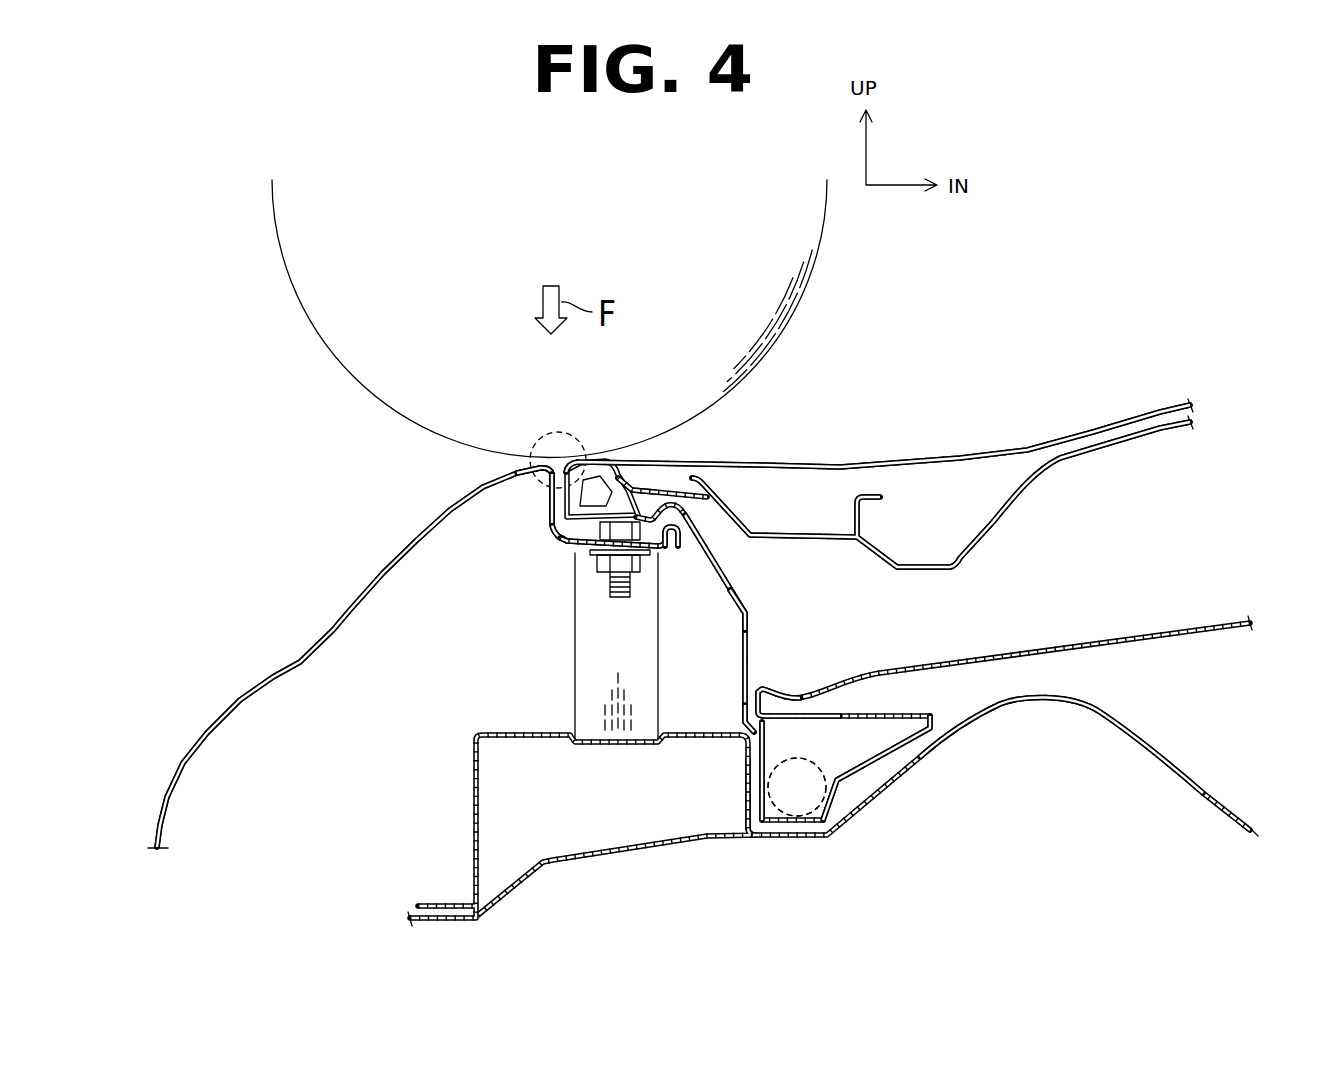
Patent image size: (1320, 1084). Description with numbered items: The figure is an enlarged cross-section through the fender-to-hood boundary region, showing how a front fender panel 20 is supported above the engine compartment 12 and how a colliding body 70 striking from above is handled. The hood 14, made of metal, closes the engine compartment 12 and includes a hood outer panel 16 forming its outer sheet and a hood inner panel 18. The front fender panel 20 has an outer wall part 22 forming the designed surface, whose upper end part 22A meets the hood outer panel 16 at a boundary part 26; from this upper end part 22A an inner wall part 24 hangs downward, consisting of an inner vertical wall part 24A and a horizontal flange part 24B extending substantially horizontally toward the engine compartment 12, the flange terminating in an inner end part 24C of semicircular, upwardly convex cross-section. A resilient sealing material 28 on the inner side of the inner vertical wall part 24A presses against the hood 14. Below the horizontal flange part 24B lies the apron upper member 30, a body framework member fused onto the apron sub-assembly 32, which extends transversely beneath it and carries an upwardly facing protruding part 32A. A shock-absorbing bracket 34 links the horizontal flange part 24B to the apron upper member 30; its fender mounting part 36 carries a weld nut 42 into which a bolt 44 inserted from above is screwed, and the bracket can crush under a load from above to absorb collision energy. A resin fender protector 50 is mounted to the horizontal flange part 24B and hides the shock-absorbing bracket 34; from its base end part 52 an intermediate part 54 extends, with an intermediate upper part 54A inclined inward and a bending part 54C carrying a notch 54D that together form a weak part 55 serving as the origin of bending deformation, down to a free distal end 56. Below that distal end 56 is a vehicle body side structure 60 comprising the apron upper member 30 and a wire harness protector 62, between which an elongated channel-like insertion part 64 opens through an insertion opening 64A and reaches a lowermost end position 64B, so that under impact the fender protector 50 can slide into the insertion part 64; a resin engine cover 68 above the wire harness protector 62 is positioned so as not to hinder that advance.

The engine compartment 12 is at (1101, 566).
The hood 14 is at (1052, 335).
The hood outer panel 16 is at (972, 455).
The hood inner panel 18 is at (1010, 493).
The front fender panel 20 is at (338, 534).
The outer wall part 22 is at (346, 600).
The upper end part 22A is at (547, 462).
The inner wall part 24 is at (547, 540).
The inner vertical wall part 24A is at (548, 513).
The horizontal flange part 24B is at (597, 548).
The inner end part 24C is at (678, 548).
The boundary part 26 is at (558, 432).
The sealing material 28 is at (590, 457).
The apron upper member 30 is at (746, 810).
The apron sub-assembly 32 is at (636, 870).
The protruding part 32A is at (1085, 700).
The shock-absorbing bracket 34 is at (557, 655).
The fender mounting part 36 is at (600, 550).
The weld nut 42 is at (633, 557).
The bolt 44 is at (624, 486).
The fender protector 50 is at (783, 604).
The base end part 52 is at (655, 482).
The intermediate part 54 is at (776, 646).
The intermediate upper part 54A is at (740, 723).
The bending part 54C is at (750, 607).
The notch 54D is at (740, 614).
The weak part 55 is at (766, 615).
The distal end 56 is at (770, 714).
The vehicle body side structure 60 is at (807, 905).
The wire harness protector 62 is at (790, 822).
The insertion part 64 is at (748, 777).
The insertion opening 64A is at (748, 752).
The lowermost end position 64B is at (770, 795).
The engine cover 68 is at (1005, 643).
The colliding body 70 is at (786, 321).